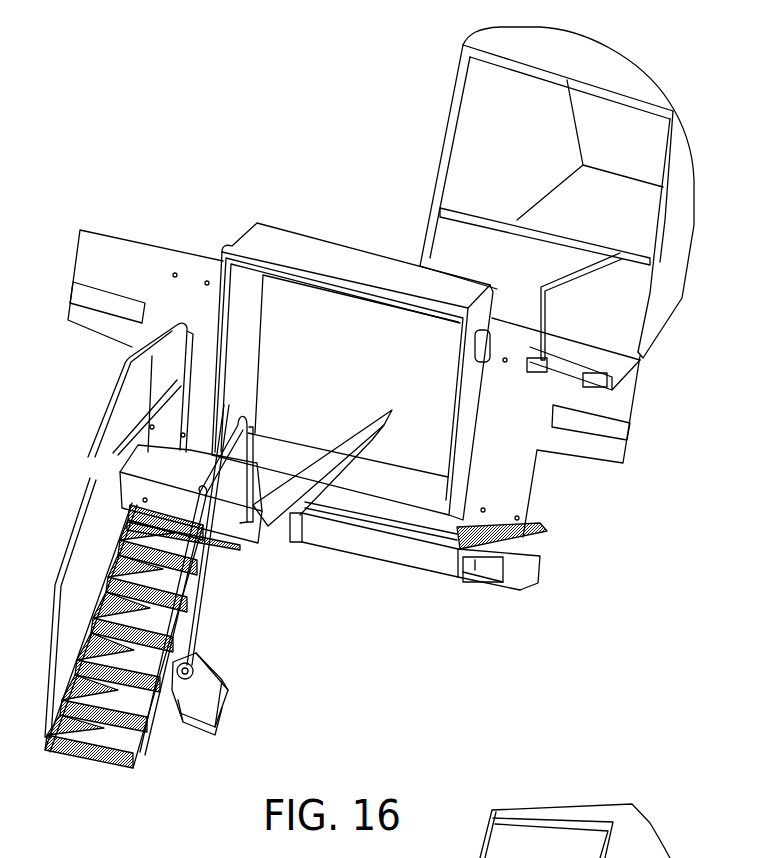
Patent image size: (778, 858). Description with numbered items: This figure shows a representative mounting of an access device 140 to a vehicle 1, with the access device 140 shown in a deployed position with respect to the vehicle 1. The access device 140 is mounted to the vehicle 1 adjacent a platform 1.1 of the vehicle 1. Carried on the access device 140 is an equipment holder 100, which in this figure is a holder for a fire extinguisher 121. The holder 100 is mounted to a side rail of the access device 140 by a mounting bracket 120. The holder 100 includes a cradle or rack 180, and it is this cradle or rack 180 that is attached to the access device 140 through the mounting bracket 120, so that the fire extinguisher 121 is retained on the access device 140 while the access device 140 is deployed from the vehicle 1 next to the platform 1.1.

The vehicle 1 is at (520, 465).
The platform 1.1 is at (170, 477).
The holder 100 is at (222, 680).
The mounting bracket 120 is at (197, 630).
The fire extinguisher 121 is at (195, 672).
The access device 140 is at (157, 735).
The cradle or rack 180 is at (222, 708).